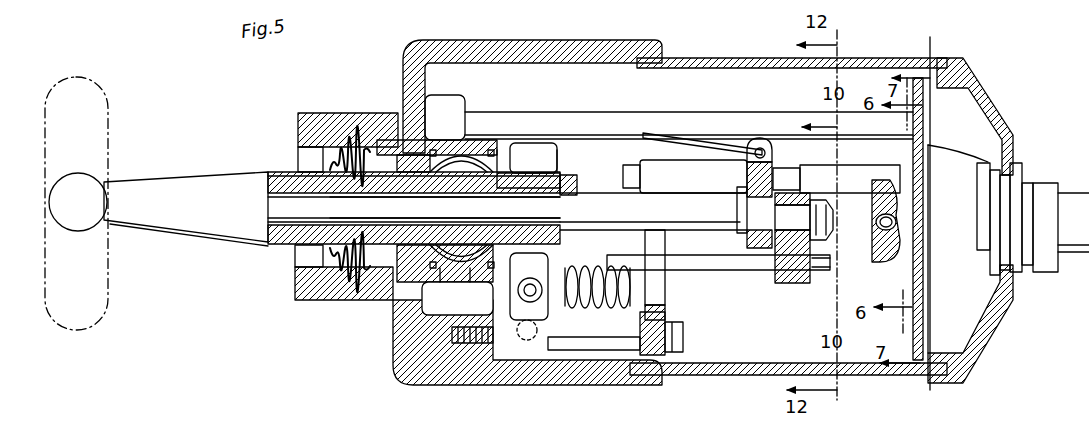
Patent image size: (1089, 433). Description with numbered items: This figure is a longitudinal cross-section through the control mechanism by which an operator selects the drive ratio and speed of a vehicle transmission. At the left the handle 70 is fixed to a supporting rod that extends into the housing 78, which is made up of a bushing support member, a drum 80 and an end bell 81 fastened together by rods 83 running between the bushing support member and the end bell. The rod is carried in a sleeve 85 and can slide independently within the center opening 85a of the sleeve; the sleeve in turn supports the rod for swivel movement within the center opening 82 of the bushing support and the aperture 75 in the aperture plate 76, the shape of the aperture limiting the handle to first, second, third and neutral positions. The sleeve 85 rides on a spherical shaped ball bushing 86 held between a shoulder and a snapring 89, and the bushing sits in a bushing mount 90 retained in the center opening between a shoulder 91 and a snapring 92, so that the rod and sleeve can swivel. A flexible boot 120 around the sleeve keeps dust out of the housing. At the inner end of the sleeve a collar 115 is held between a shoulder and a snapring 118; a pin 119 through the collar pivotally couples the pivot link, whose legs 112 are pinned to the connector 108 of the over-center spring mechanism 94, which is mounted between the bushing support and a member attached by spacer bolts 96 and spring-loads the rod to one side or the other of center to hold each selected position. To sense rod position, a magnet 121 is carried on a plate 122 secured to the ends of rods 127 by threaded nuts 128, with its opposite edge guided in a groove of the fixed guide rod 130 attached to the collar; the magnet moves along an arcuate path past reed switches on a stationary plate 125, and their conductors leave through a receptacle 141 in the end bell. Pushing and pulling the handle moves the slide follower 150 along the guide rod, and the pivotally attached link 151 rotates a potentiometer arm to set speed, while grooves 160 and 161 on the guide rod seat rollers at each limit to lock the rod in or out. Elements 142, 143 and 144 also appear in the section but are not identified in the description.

The handle 70 is at (65, 197).
The aperture 75 is at (302, 152).
The aperture plate 76 is at (345, 118).
The housing 78 is at (566, 40).
The drum 80 is at (748, 54).
The end bell 81 is at (1008, 305).
The center opening 82 is at (505, 163).
The rods 83 is at (600, 113).
The sleeve 85 is at (295, 242).
The center opening of the sleeve 85a is at (468, 193).
The spherical shaped ball bushing 86 is at (450, 258).
The snapring 89 is at (432, 258).
The bushing mount 90 is at (472, 262).
The shoulder 91 is at (498, 150).
The snapring 92 is at (432, 157).
The over-center spring mechanism 94 is at (648, 306).
The spacer bolts 96 is at (610, 343).
The connector 108 is at (566, 302).
The legs 112 is at (550, 322).
The collar 115 is at (546, 150).
The snapring 118 is at (562, 184).
The pin 119 is at (529, 296).
The flexible boot 120 is at (362, 272).
The magnet 121 is at (876, 222).
The plate 122 is at (876, 245).
The stationary plate 125 is at (924, 262).
The rods 127 is at (735, 270).
The threaded nuts 128 is at (890, 278).
The guide rod 130 is at (858, 172).
The receptacle 141 is at (1028, 182).
The nut 142 is at (822, 214).
The inner shaft 143 is at (278, 183).
The block 144 is at (780, 284).
The slide follower 150 is at (745, 242).
The link 151 is at (697, 142).
The groove 160 is at (790, 168).
The groove 161 is at (634, 160).